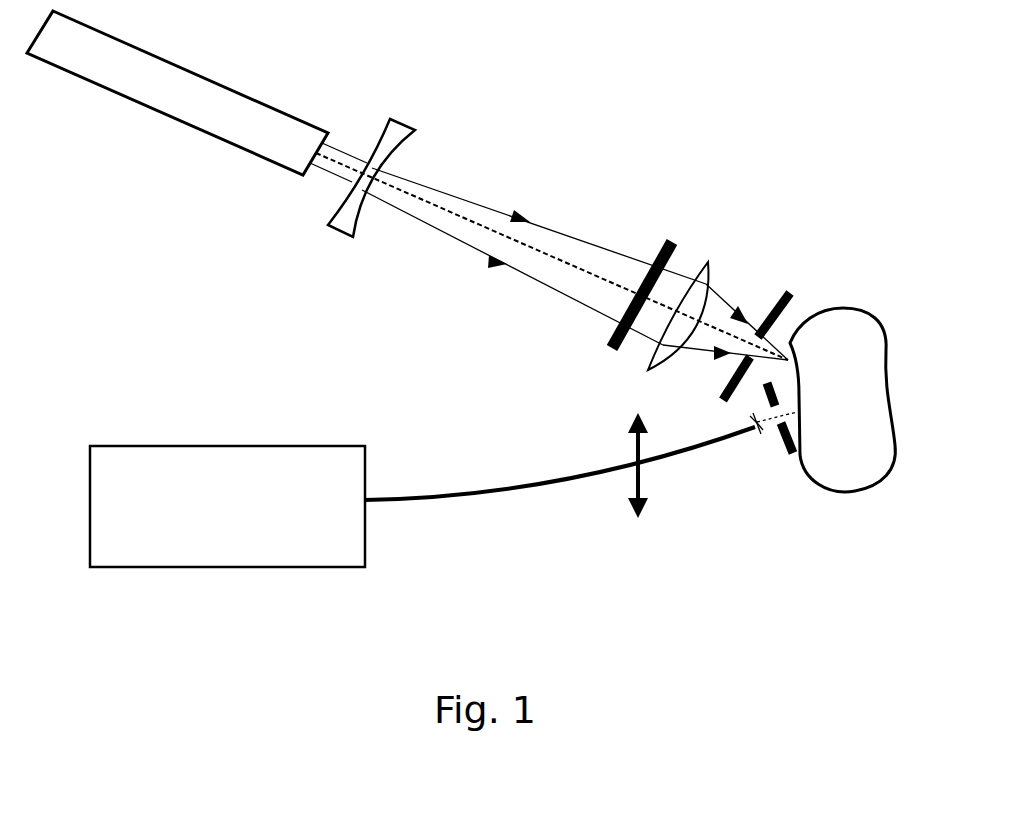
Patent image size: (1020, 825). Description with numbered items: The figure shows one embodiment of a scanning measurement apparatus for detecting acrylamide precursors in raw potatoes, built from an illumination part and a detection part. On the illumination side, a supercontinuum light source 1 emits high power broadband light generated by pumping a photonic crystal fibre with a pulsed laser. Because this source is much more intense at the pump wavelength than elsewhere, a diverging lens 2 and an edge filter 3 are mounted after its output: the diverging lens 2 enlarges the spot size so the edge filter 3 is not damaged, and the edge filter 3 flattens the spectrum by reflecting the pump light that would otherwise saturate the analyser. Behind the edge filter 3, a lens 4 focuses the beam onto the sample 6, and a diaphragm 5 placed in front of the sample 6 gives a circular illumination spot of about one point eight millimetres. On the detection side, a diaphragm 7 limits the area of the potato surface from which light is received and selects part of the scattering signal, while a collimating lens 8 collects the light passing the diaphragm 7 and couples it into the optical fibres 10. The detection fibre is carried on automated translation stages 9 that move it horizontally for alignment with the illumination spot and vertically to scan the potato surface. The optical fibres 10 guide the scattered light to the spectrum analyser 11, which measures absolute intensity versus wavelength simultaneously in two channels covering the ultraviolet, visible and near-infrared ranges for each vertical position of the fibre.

The supercontinuum light source 1 is at (177, 93).
The diverging lens 2 is at (395, 130).
The edge filter 3 is at (662, 247).
The lens 4 is at (703, 273).
The diaphragm 5 is at (783, 293).
The sample 6 is at (842, 400).
The diaphragm 7 is at (785, 437).
The collimating lens 8 is at (757, 428).
The automated translation stages 9 is at (632, 513).
The optical fibres 10 is at (503, 487).
The spectrum analyser 11 is at (227, 506).